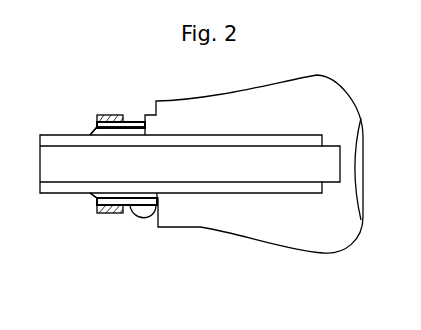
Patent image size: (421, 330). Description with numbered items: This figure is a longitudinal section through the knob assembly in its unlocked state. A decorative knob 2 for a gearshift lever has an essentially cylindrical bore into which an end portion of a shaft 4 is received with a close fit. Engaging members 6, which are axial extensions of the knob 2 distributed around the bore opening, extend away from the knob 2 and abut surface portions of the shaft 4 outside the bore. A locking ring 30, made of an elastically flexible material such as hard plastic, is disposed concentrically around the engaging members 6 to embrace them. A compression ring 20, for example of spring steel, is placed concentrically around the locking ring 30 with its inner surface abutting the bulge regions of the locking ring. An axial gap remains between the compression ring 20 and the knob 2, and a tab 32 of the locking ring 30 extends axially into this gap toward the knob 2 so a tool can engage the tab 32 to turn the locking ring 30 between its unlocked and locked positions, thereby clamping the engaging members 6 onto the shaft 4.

The knob 2 is at (332, 75).
The shaft 4 is at (58, 194).
The engaging members 6 is at (87, 128).
The compression ring 20 is at (111, 114).
The locking ring 30 is at (136, 113).
The tab 32 is at (131, 214).